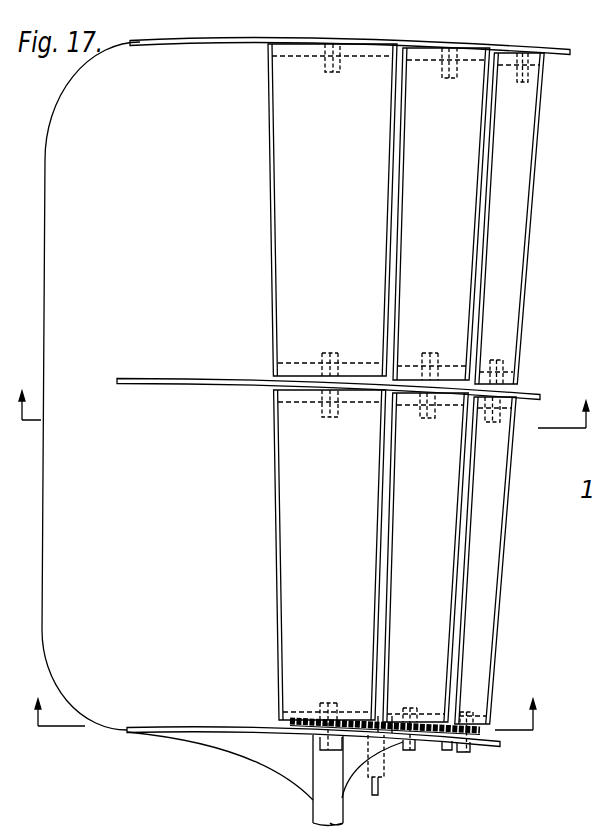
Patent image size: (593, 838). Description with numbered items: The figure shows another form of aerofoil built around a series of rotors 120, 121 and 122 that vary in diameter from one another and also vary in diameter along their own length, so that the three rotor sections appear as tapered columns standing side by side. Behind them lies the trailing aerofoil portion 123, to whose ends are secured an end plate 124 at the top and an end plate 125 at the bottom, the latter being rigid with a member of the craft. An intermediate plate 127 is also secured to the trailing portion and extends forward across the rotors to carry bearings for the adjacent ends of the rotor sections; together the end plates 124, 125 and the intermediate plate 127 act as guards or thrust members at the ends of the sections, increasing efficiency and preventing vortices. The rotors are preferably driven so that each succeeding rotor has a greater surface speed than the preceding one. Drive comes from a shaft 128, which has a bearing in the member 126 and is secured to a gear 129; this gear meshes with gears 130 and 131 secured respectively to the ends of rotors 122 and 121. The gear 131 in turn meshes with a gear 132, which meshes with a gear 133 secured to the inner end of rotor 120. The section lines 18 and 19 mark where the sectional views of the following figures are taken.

The section line 18- 18 is at (304, 394).
The section line 19- 19 is at (287, 702).
The rotor 120 is at (499, 402).
The rotor 121 is at (436, 399).
The rotor 122 is at (332, 397).
The trailing aerofoil portion 123 is at (107, 386).
The end plate 124 is at (235, 40).
The end plate 125 is at (199, 731).
The member 126 is at (298, 752).
The intermediate plate 127 is at (208, 381).
The shaft 128 is at (380, 792).
The gear 129 is at (385, 716).
The gear 130 is at (303, 718).
The gear 131 is at (425, 719).
The gear 132 is at (450, 723).
The gear 133 is at (482, 731).